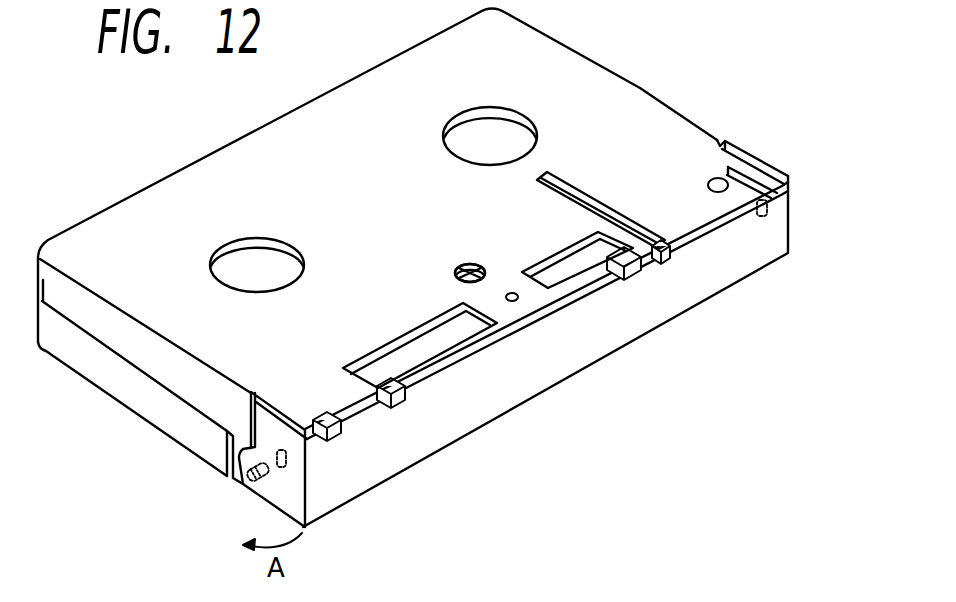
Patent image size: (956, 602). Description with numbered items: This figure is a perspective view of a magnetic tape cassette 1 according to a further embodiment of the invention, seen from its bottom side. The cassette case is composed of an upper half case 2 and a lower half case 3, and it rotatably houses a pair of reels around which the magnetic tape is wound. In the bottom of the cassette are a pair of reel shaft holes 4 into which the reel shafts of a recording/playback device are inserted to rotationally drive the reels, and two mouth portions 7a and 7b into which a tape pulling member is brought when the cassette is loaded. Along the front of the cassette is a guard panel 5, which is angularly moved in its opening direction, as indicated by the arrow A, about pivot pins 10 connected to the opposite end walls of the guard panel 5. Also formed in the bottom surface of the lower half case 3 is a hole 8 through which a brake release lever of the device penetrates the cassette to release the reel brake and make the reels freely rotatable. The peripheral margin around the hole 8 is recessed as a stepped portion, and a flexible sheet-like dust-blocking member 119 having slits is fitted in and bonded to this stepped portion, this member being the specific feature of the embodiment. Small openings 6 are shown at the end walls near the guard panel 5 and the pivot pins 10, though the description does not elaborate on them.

The magnetic tape cassette 1 is at (631, 75).
The upper half case 2 is at (92, 362).
The lower half case 3 is at (72, 240).
The reel shaft hole 4 is at (277, 257).
The guard panel 5 is at (742, 263).
The engaging hole 6 is at (770, 218).
The mouth portion 7a is at (386, 347).
The mouth portion 7b is at (543, 262).
The hole 8 is at (458, 268).
The pivot pin 10 is at (243, 488).
The dust-blocking member 119 is at (474, 263).